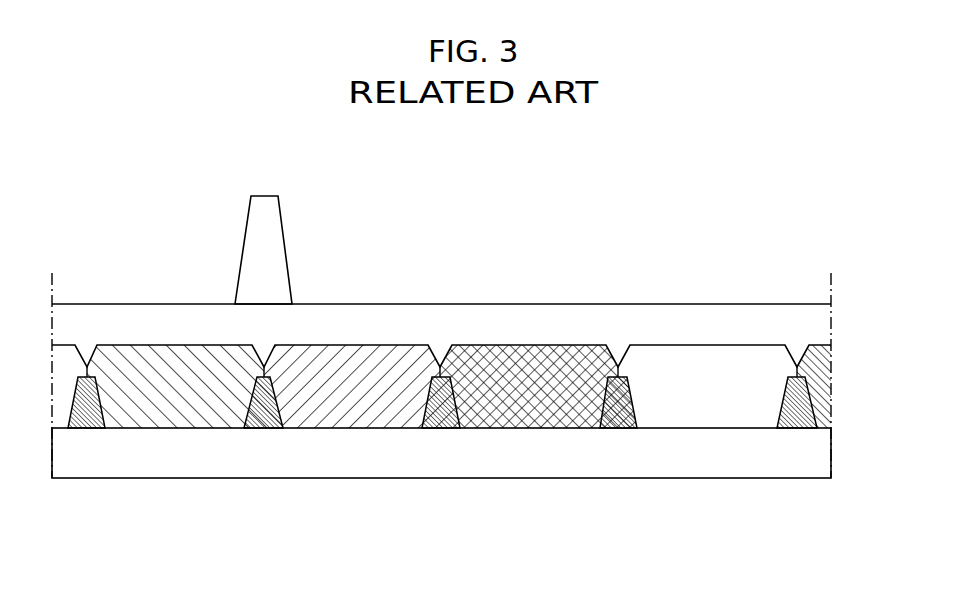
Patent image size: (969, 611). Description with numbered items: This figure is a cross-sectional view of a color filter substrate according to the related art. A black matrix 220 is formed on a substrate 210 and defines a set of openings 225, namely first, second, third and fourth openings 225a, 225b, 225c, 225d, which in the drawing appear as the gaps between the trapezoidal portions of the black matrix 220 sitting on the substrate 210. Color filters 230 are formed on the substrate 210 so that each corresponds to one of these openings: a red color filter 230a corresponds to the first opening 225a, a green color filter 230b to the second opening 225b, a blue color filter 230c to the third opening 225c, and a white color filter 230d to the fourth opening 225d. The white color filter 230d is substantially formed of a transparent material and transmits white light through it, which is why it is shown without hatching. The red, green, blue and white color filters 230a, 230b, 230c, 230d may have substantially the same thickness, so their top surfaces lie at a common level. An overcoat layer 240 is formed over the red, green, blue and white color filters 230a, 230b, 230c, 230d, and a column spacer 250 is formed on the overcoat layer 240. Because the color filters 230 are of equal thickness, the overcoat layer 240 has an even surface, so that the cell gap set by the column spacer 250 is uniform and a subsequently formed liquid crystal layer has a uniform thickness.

The substrate 210 is at (410, 464).
The black matrix 220 is at (824, 408).
The openings 225 is at (442, 476).
The first opening 225a is at (170, 425).
The second opening 225b is at (342, 425).
The third opening 225c is at (537, 425).
The fourth opening 225d is at (668, 450).
The color filters 230 is at (452, 290).
The red color filter 230a is at (170, 357).
The green color filter 230b is at (352, 357).
The blue color filter 230c is at (533, 357).
The white color filter 230d is at (717, 315).
The overcoat layer 240 is at (805, 323).
The column spacer 250 is at (248, 239).